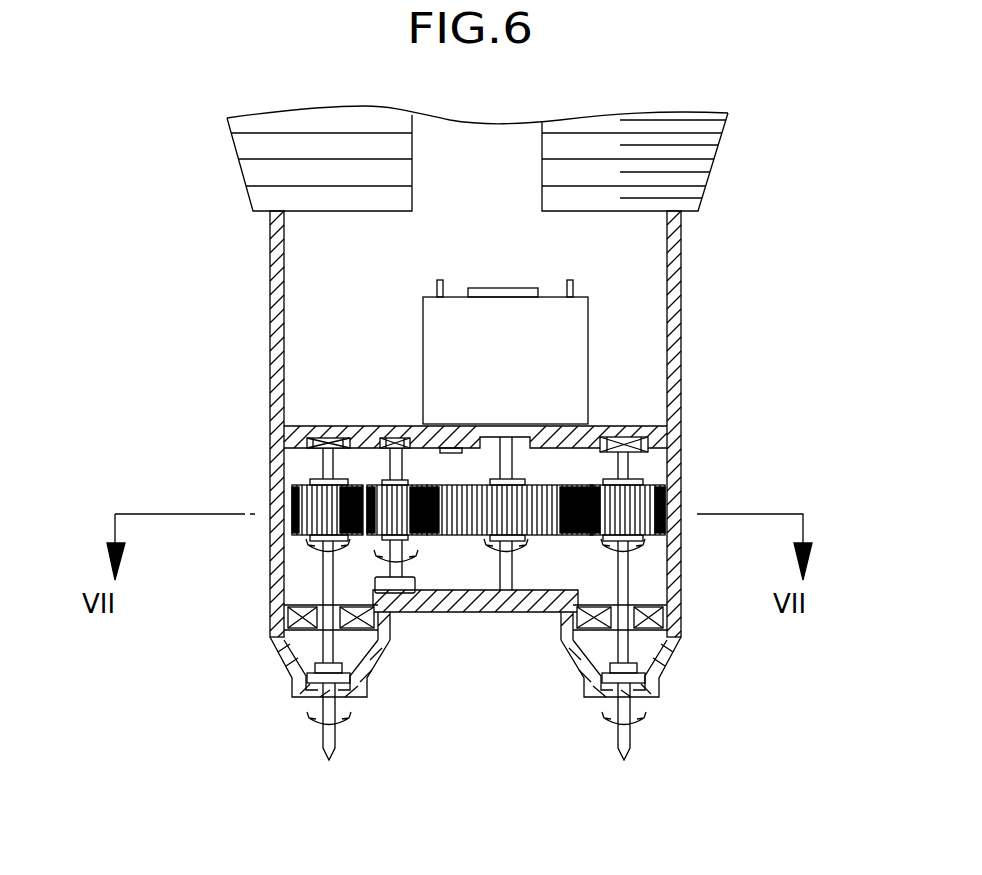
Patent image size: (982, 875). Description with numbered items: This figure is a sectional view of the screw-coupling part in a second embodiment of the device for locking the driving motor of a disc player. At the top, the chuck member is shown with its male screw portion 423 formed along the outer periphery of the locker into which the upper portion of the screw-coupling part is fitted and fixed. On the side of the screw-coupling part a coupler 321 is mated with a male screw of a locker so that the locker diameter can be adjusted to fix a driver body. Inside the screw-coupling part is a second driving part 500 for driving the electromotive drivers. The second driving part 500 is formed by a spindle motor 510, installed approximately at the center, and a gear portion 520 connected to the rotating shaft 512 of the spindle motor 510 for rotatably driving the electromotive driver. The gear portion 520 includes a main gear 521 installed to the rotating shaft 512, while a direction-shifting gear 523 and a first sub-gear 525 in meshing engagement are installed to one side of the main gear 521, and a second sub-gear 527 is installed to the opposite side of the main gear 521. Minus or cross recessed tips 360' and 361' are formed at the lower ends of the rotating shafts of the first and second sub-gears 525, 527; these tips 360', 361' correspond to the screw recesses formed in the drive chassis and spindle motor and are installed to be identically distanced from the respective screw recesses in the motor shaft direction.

The male screw portion 423 is at (255, 157).
The spindle motor 510 is at (428, 327).
The coupler 321 is at (272, 343).
The second driving part 500 is at (449, 518).
The gear portion 520 is at (131, 408).
The direction-shifting gear 523 is at (380, 485).
The first sub-gear 525 is at (292, 488).
The rotating shaft 512 is at (512, 462).
The second sub-gear 527 is at (665, 493).
The main gear 521 is at (460, 560).
The minus or cross recessed tip 360' is at (284, 744).
The minus or cross recessed tip 361' is at (676, 744).